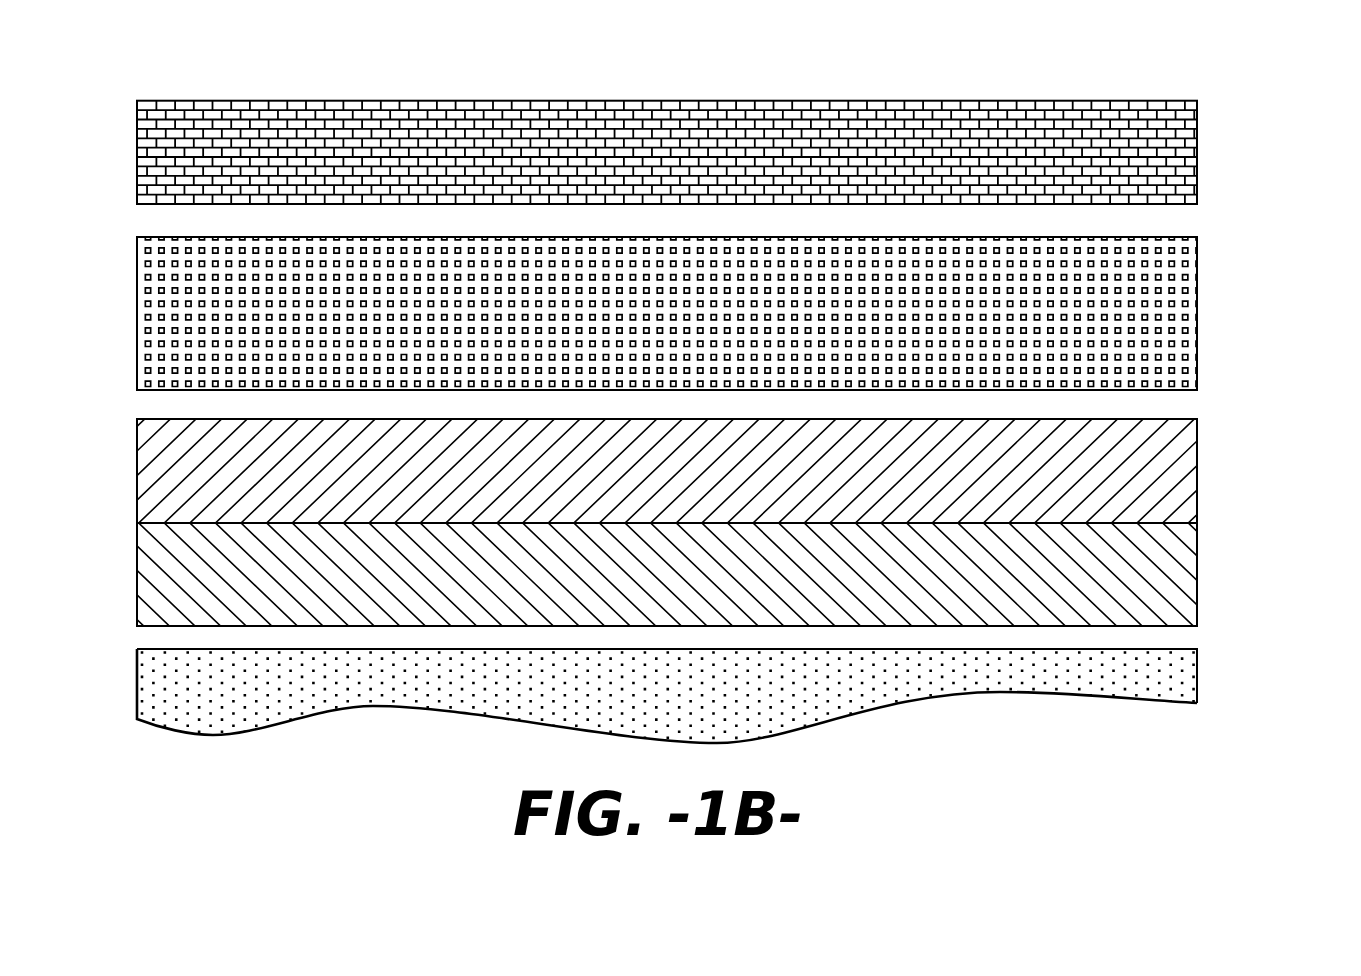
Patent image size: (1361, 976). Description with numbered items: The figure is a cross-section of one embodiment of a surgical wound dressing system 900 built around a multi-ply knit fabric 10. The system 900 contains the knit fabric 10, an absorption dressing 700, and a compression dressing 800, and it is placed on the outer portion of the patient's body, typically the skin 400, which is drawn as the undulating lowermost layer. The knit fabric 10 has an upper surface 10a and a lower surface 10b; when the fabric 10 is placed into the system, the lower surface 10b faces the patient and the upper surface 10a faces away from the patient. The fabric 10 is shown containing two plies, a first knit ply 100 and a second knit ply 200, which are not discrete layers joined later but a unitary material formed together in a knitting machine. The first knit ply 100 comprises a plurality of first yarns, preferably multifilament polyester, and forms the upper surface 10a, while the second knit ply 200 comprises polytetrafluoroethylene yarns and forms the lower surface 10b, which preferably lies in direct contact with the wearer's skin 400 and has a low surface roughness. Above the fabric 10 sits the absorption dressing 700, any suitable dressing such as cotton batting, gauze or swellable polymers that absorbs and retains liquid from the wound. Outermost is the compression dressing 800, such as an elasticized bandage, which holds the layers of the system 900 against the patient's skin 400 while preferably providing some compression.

The surgical wound dressing system 900 is at (1244, 113).
The compression dressing 800 is at (162, 146).
The absorption dressing 700 is at (162, 310).
The multi-ply knit fabric 10 is at (1218, 419).
The upper surface 10a is at (1215, 415).
The lower surface 10b is at (1215, 632).
The first knit ply 100 is at (162, 462).
The second knit ply 200 is at (162, 568).
The patient's outer portion of the body (skin) 400 is at (162, 690).